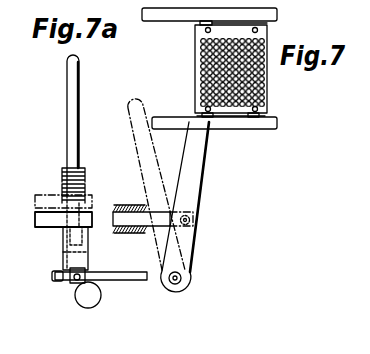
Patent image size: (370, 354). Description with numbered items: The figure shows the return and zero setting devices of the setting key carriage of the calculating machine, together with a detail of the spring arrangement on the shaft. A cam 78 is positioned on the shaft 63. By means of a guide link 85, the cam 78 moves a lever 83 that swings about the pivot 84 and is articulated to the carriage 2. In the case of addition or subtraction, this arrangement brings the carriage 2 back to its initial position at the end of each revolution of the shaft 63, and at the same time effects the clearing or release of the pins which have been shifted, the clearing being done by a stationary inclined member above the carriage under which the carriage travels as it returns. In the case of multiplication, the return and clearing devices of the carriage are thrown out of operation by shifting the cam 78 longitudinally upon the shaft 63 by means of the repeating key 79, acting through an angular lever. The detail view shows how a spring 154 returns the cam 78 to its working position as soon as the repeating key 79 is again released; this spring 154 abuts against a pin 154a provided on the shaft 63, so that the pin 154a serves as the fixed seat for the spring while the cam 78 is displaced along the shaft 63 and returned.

In FIG. 7, the carriage 2 is at (268, 90).
In FIG. 7, the lever 83 is at (200, 170).
In FIG. 7, the pivot 84 is at (181, 278).
In FIG. 7, the guide link 85 is at (157, 219).
In FIG. 7A, the shaft 63 is at (74, 139).
In FIG. 7A, the pin 154a is at (83, 171).
In FIG. 7A, the spring 154 is at (84, 197).
In FIG. 7A, the cam 78 is at (55, 220).
In FIG. 7A, the repeating key 79 is at (101, 297).